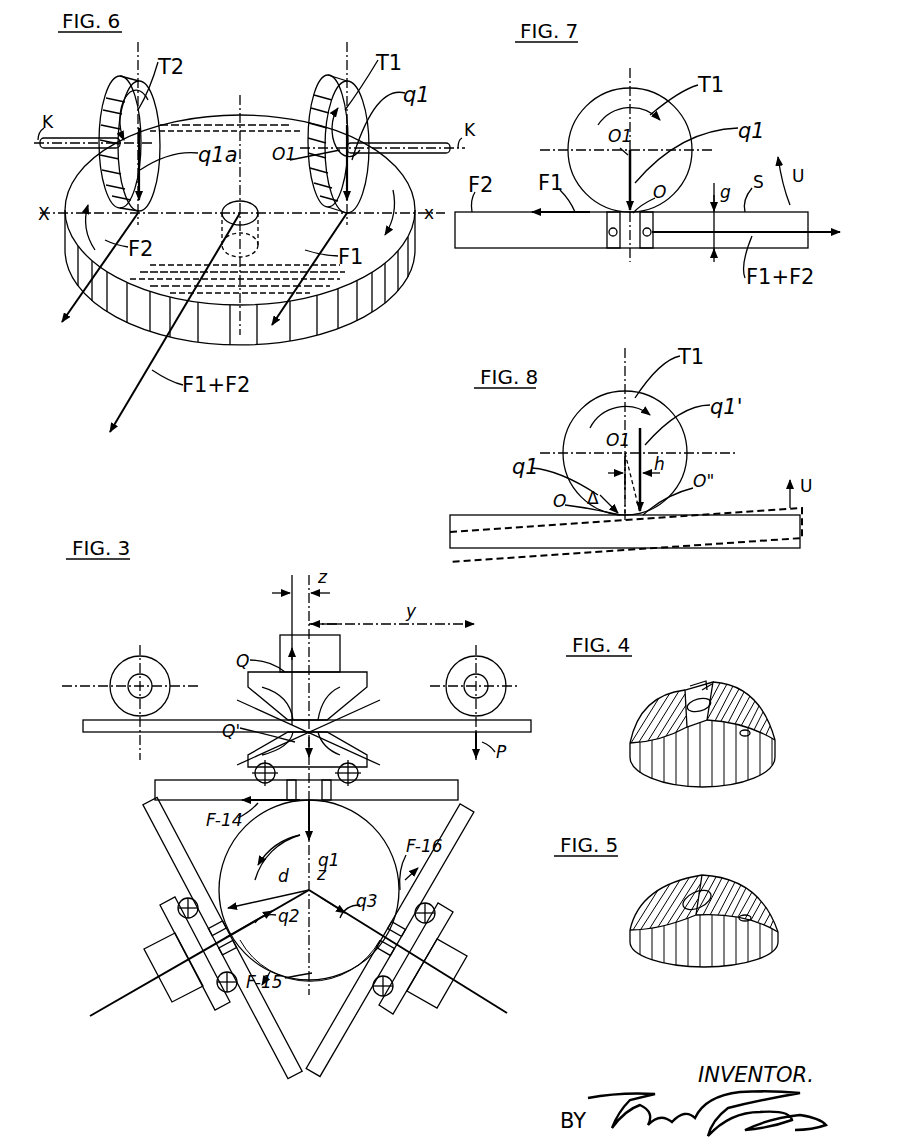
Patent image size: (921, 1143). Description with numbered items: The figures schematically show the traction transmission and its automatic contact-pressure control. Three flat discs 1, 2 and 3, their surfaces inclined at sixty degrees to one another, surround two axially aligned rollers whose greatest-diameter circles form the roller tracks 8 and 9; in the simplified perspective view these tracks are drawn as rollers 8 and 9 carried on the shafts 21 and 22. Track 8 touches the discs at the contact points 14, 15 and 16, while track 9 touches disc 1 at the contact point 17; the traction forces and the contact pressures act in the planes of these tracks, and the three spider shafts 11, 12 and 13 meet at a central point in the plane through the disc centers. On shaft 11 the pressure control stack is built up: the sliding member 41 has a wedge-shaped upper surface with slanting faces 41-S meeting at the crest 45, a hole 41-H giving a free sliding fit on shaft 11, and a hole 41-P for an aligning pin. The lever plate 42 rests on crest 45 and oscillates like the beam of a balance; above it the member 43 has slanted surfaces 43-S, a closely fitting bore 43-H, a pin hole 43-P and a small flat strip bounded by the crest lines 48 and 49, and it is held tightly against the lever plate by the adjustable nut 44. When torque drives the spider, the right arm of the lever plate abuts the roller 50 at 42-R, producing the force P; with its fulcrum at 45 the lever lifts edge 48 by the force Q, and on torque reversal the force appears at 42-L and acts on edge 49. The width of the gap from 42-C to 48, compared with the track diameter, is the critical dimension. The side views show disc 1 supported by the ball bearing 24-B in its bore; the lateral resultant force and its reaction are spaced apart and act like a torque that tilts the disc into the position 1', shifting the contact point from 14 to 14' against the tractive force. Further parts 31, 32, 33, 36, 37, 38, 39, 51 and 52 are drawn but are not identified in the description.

In FIG. 6, the disc 1 is at (240, 236).
In FIG. 7, the disc 1 is at (647, 256).
In FIG. 8, the disc 1 is at (625, 557).
In FIG. 3, the disc 1 is at (306, 772).
In FIG. 8, the tilted disc position 1' is at (626, 515).
In FIG. 3, the disc 2 is at (165, 830).
In FIG. 3, the disc 3 is at (440, 852).
In FIG. 6, the roller track 8 is at (335, 82).
In FIG. 7, the roller track 8 is at (690, 125).
In FIG. 8, the roller track 8 is at (662, 400).
In FIG. 3, the roller track 8 is at (360, 835).
In FIG. 6, the roller track 9 is at (128, 82).
In FIG. 3, the shaft 11 is at (292, 645).
In FIG. 3, the spider shaft 12 is at (148, 985).
In FIG. 3, the spider shaft 13 is at (468, 990).
In FIG. 6, the contact point 14 is at (333, 228).
In FIG. 8, the contact point 14 is at (637, 556).
In FIG. 3, the contact point 14 is at (336, 820).
In FIG. 8, the displaced contact point 14' is at (666, 556).
In FIG. 3, the contact point 15 is at (248, 930).
In FIG. 3, the contact point 16 is at (378, 936).
In FIG. 6, the contact point 17 is at (130, 212).
In FIG. 6, the shaft 21 is at (405, 142).
In FIG. 6, the shaft 22 is at (58, 138).
In FIG. 7, the ball bearing 24-B is at (612, 236).
In FIG. 3, the bearings 31 is at (362, 776).
In FIG. 3, the bearing 32 is at (238, 995).
In FIG. 3, the bearing 33 is at (372, 998).
In FIG. 3, the bearing block 36 is at (168, 900).
In FIG. 3, the bearing block 37 is at (440, 903).
In FIG. 3, the mounting block 38 is at (160, 948).
In FIG. 3, the mounting block 39 is at (450, 950).
In FIG. 3, the sliding member 41 is at (290, 765).
In FIG. 5, the sliding member 41 is at (670, 956).
In FIG. 5, the hole 41-H is at (695, 893).
In FIG. 5, the hole 41-P is at (752, 915).
In FIG. 5, the slanting surfaces 41-S is at (650, 912).
In FIG. 3, the lever plate 42 is at (168, 732).
In FIG. 3, the left end of lever plate 42-L is at (125, 700).
In FIG. 3, the right end of lever plate 42-R is at (498, 700).
In FIG. 3, the center of lever plate 42-C is at (322, 685).
In FIG. 3, the upper cam member 43 is at (278, 685).
In FIG. 4, the upper cam member 43 is at (675, 760).
In FIG. 4, the bore 43-H is at (690, 700).
In FIG. 4, the hole 43-P is at (752, 733).
In FIG. 4, the slanted surfaces 43-S is at (645, 728).
In FIG. 3, the adjustable nut 44 is at (325, 645).
In FIG. 3, the crest line 45 is at (345, 755).
In FIG. 5, the crest line 45 is at (710, 880).
In FIG. 3, the crest line 48 is at (262, 712).
In FIG. 4, the crest line 48 is at (696, 686).
In FIG. 3, the crest line 49 is at (345, 690).
In FIG. 4, the crest line 49 is at (712, 695).
In FIG. 3, the roller 50 is at (493, 678).
In FIG. 3, the left roller 51 is at (137, 660).
In FIG. 3, the roller axle 52 is at (130, 680).